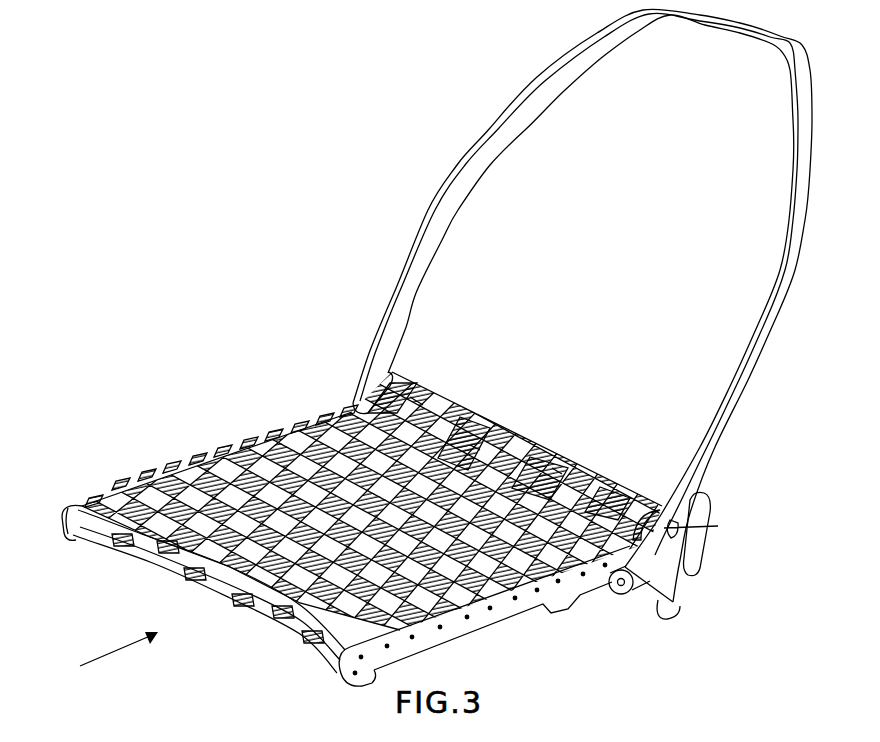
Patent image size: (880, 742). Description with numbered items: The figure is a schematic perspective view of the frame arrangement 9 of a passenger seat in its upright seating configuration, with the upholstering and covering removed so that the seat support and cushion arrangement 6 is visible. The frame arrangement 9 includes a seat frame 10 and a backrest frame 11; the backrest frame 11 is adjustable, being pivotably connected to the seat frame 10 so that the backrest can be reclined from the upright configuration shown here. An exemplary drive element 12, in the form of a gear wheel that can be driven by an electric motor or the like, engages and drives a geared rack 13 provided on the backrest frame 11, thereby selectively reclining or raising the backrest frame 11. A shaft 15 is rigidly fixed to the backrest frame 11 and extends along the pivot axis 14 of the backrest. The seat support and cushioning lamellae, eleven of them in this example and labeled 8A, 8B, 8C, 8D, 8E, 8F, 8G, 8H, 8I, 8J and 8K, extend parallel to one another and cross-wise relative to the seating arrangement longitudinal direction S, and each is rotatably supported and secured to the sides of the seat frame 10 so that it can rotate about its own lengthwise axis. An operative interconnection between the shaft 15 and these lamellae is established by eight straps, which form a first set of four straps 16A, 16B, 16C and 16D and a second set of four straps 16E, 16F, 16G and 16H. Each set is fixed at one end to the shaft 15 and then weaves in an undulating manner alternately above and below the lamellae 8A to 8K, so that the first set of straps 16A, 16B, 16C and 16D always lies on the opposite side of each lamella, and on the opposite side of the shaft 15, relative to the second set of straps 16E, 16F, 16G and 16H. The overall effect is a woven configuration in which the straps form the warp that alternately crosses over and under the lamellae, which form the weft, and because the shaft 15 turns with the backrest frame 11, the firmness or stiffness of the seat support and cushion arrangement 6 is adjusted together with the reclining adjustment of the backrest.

The frame arrangement 9 is at (569, 305).
The backrest frame 11 is at (756, 374).
The seat support and cushion arrangement 6 is at (249, 645).
The seating arrangement longitudinal direction S is at (119, 659).
The seat frame 10 is at (570, 604).
The drive element 12 is at (620, 596).
The geared rack 13 is at (681, 611).
The pivot axis 14 is at (718, 527).
The shaft 15 is at (520, 440).
The seat support and cushioning lamella 8A is at (82, 500).
The seat support and cushioning lamella 8B is at (119, 486).
The seat support and cushioning lamella 8C is at (130, 478).
The seat support and cushioning lamella 8D is at (170, 468).
The seat support and cushioning lamella 8E is at (193, 460).
The seat support and cushioning lamella 8F is at (218, 452).
The seat support and cushioning lamella 8G is at (243, 445).
The seat support and cushioning lamella 8H is at (268, 436).
The seat support and cushioning lamella 8I is at (294, 430).
The seat support and cushioning lamella 8J is at (320, 416).
The seat support and cushioning lamella 8K is at (348, 410).
The strap 16A is at (410, 397).
The strap 16B is at (470, 445).
The strap 16C is at (552, 468).
The strap 16D is at (622, 492).
The strap 16E is at (396, 372).
The strap 16F is at (412, 447).
The strap 16G is at (556, 462).
The strap 16H is at (605, 455).